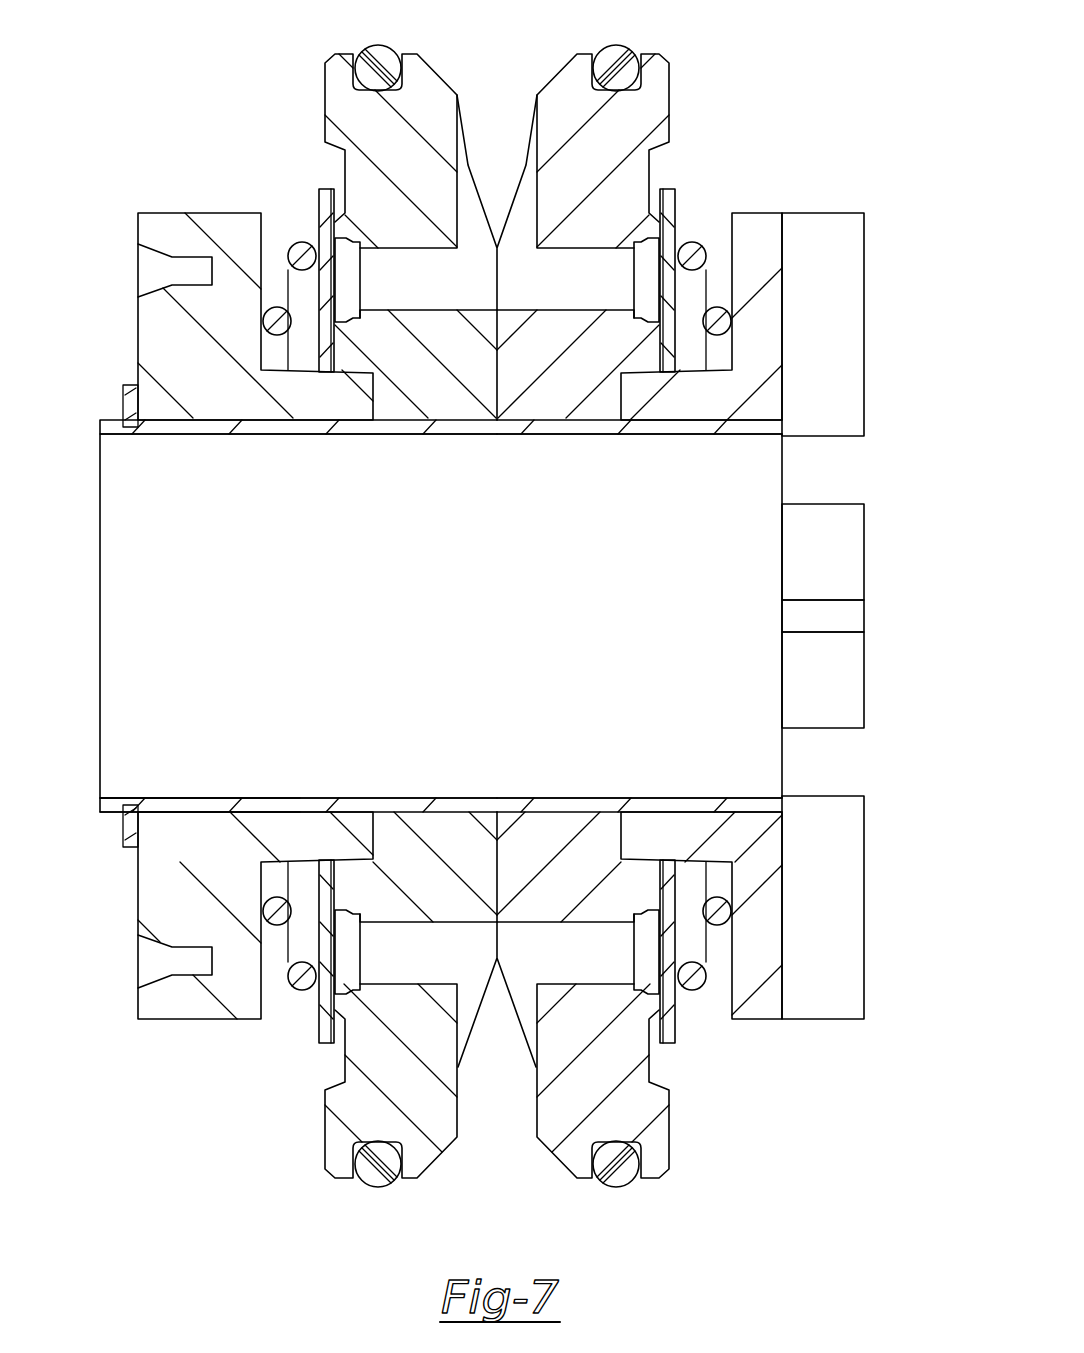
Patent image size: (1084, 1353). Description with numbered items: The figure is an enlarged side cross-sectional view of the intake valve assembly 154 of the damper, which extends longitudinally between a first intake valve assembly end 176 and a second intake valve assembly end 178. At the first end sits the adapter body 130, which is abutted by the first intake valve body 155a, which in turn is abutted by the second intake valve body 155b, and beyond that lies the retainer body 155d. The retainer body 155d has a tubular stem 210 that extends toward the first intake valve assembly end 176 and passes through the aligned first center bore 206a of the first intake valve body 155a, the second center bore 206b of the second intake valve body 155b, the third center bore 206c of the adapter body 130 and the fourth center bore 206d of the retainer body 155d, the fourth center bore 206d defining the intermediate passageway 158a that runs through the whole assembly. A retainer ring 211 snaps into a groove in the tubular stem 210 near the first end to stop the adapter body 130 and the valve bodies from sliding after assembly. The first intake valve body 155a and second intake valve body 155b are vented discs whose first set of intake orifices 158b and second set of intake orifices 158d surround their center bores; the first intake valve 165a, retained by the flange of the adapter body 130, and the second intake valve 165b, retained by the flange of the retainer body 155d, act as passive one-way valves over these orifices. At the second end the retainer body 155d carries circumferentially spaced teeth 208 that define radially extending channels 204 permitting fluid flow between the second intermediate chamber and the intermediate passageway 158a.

The intake valve assembly 154 is at (496, 618).
The first intake valve body 155a is at (368, 113).
The second intake valve body 155b is at (626, 113).
The retainer body 155d is at (752, 218).
The intermediate passageway 158a is at (445, 597).
The first set of intake orifices 158b is at (355, 618).
The second set of intake orifices 158d is at (639, 618).
The first intake valve assembly end 176 is at (216, 282).
The adapter body 130 is at (205, 215).
The plurality of teeth 208 is at (857, 608).
The second intake valve assembly end 178 is at (880, 212).
The first center bore 206a is at (437, 805).
The second center bore 206b is at (540, 805).
The third center bore 206c is at (262, 425).
The fourth center bore 206d is at (725, 434).
The plurality of channels 204 is at (822, 473).
The tubular stem 210 is at (295, 805).
The retainer ring 211 is at (123, 830).
The first intake valve 165a is at (294, 1012).
The second intake valve 165b is at (694, 1012).